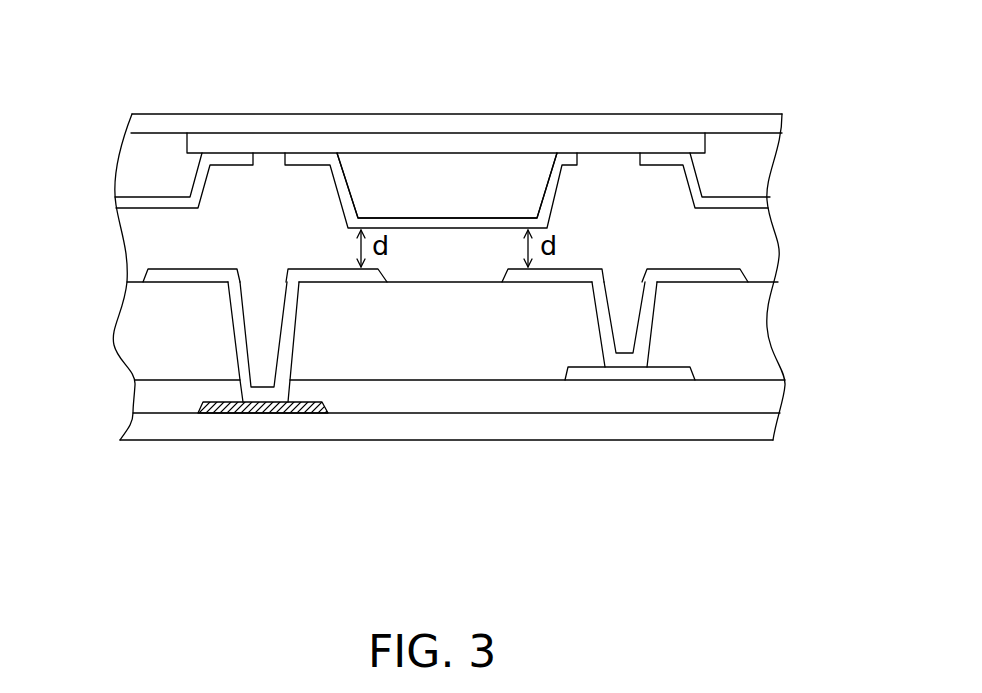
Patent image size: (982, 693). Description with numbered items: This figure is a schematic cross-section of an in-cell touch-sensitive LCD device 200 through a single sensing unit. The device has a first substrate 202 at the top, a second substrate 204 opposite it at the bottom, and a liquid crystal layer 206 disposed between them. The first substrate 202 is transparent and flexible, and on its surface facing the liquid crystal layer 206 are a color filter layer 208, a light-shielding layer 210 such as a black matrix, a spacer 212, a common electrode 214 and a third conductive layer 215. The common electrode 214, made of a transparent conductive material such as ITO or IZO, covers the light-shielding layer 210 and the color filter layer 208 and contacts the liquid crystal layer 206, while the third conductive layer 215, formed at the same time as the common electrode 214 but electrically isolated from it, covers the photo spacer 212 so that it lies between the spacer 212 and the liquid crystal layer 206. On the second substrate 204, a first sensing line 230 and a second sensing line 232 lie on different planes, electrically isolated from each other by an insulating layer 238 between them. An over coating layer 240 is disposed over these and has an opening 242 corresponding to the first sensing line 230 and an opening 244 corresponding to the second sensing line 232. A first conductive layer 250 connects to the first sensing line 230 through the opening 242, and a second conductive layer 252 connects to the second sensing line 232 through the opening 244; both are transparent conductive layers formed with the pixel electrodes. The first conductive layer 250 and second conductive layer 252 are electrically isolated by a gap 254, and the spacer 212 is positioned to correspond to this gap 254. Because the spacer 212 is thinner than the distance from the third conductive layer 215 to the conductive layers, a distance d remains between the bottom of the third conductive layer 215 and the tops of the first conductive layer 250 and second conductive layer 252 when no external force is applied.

The in-cell touch-sensitive LCD device 200 is at (723, 66).
The first substrate 202 is at (773, 123).
The second substrate 204 is at (768, 430).
The liquid crystal layer 206 is at (773, 257).
The color filter layer 208 is at (178, 181).
The light-shielding layer 210 is at (540, 147).
The spacer 212 is at (461, 200).
The common electrode 214 is at (118, 204).
The third conductive layer 215 is at (557, 174).
The first sensing line 230 is at (308, 413).
The second sensing line 232 is at (683, 375).
The insulating layer 238 is at (775, 399).
The over coating layer 240 is at (197, 349).
The opening 242 is at (262, 304).
The opening 244 is at (625, 304).
The first conductive layer 250 is at (188, 267).
The second conductive layer 252 is at (727, 268).
The gap 254 is at (502, 268).